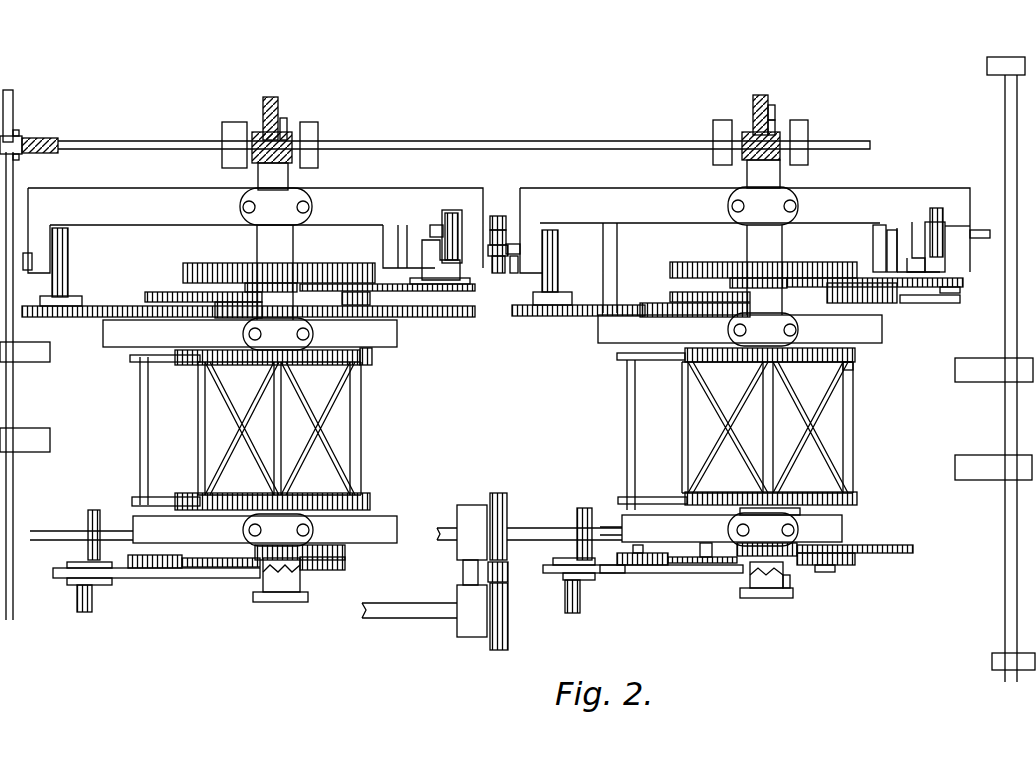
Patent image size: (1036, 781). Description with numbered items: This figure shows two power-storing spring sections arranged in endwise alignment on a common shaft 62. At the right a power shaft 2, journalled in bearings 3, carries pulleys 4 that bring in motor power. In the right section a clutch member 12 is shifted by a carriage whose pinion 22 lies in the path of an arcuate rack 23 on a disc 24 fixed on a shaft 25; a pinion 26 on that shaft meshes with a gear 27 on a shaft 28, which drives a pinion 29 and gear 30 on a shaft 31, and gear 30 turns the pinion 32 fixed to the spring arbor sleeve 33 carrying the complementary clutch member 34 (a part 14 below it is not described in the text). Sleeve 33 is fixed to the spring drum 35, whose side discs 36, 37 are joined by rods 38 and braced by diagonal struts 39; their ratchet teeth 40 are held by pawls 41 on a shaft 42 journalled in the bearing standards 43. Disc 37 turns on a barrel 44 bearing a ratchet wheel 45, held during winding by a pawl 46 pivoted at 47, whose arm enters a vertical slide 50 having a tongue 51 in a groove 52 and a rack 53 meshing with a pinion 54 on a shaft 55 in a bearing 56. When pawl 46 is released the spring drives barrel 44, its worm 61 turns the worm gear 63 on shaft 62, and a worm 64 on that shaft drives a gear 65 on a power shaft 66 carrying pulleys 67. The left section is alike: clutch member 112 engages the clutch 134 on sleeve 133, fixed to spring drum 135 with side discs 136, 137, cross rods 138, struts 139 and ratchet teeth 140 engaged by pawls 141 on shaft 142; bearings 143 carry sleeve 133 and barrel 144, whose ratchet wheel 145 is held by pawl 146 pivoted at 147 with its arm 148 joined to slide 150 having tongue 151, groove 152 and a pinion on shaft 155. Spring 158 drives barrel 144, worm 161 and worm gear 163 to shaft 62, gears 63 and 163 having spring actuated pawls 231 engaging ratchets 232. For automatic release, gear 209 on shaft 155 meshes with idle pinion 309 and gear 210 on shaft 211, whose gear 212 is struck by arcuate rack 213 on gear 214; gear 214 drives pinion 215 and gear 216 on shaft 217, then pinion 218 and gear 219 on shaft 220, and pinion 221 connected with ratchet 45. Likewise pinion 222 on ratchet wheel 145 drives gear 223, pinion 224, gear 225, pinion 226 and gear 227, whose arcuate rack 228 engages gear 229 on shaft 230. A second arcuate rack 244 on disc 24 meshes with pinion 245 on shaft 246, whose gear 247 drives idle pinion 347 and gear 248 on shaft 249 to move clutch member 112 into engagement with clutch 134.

The power shaft 2 is at (1005, 633).
The bearings 3 is at (987, 68).
The pulleys 4 is at (977, 455).
The clutch member 12 is at (790, 585).
The base plate 14 is at (790, 598).
The pinion 22 is at (580, 600).
The arcuate rack 23 is at (630, 566).
The disc 24 is at (638, 573).
The shaft 25 is at (643, 548).
The pinion 26 is at (685, 573).
The gear 27 is at (707, 563).
The shaft 28 is at (737, 548).
The pinion 29 is at (835, 567).
The gear 30 is at (892, 546).
The shaft 31 is at (828, 580).
The pinion 32 is at (735, 526).
The spring arbor sleeve 33 is at (832, 512).
The complementary clutch member 34 is at (752, 572).
The spring drum 35 is at (830, 400).
The side disc 36 is at (832, 492).
The side disc 37 is at (858, 366).
The rods 38 is at (682, 405).
The diagonal struts 39 is at (768, 427).
The circumferential ratchet teeth 40 is at (857, 356).
The pawls 41 is at (655, 361).
The shaft 42 is at (627, 420).
The bearing standards 43 is at (878, 333).
The barrel 44 is at (748, 242).
The ratchet wheel 45 is at (797, 264).
The pawl 46 is at (877, 247).
The pivot 47 is at (880, 228).
The vertical slide 50 is at (960, 281).
The tongue 51 is at (914, 228).
The groove 52 is at (897, 235).
The rack 53 is at (946, 260).
The pinion 54 is at (940, 210).
The shaft 55 is at (982, 230).
The bearing 56 is at (957, 233).
The worm 61 is at (782, 135).
The shaft 62 is at (635, 140).
The worm gear 63 is at (768, 102).
The worm 64 is at (18, 138).
The gear 65 is at (50, 140).
The power shaft 66 is at (13, 96).
The pulleys 67 is at (45, 428).
The clutch member 112 is at (290, 592).
The sleeve 133 is at (320, 515).
The clutch 134 is at (265, 558).
The spring drum 135 is at (373, 367).
The side disc 136 is at (372, 497).
The side disc 137 is at (372, 357).
The cross rods 138 is at (362, 422).
The struts 139 is at (222, 388).
The ratchet teeth 140 is at (366, 366).
The pawls 141 is at (168, 363).
The shaft 142 is at (140, 435).
The bearings 143 is at (372, 335).
The barrel 144 is at (344, 306).
The ratchet wheel 145 is at (318, 268).
The pawl 146 is at (402, 240).
The pivot 147 is at (383, 230).
The arm 148 is at (428, 280).
The slide 150 is at (462, 282).
The tongue 151 is at (452, 212).
The groove 152 is at (428, 240).
The shaft 155 is at (490, 224).
The spring 158 is at (352, 452).
The worm 161 is at (285, 130).
The worm gear 163 is at (263, 100).
The gear 209 is at (505, 236).
The gear 210 is at (500, 273).
The shaft 211 is at (515, 268).
The gear 212 is at (558, 250).
The arcuate rack 213 is at (562, 296).
The gear 214 is at (563, 316).
The pinion 215 is at (705, 315).
The gear 216 is at (675, 292).
The shaft 217 is at (800, 320).
The pinion 218 is at (898, 293).
The gear 219 is at (958, 290).
The shaft 220 is at (943, 314).
The pinion 221 is at (735, 280).
The pinion 222 is at (272, 262).
The gear 223 is at (418, 290).
The pinion 224 is at (302, 334).
The gear 225 is at (165, 292).
The pinion 226 is at (228, 305).
The gear 227 is at (115, 305).
The arcuate rack 228 is at (73, 306).
The gear 229 is at (68, 252).
The shaft 230 is at (30, 240).
The spring actuated pawl 231 is at (776, 122).
The ratchet 232 is at (776, 108).
The arcuate rack 244 is at (555, 574).
The pinion 245 is at (590, 508).
The shaft 246 is at (548, 528).
The gear 247 is at (505, 492).
The gear 248 is at (510, 630).
The shaft 249 is at (420, 613).
The idle pinion 309 is at (507, 250).
The idle pinion 347 is at (508, 572).